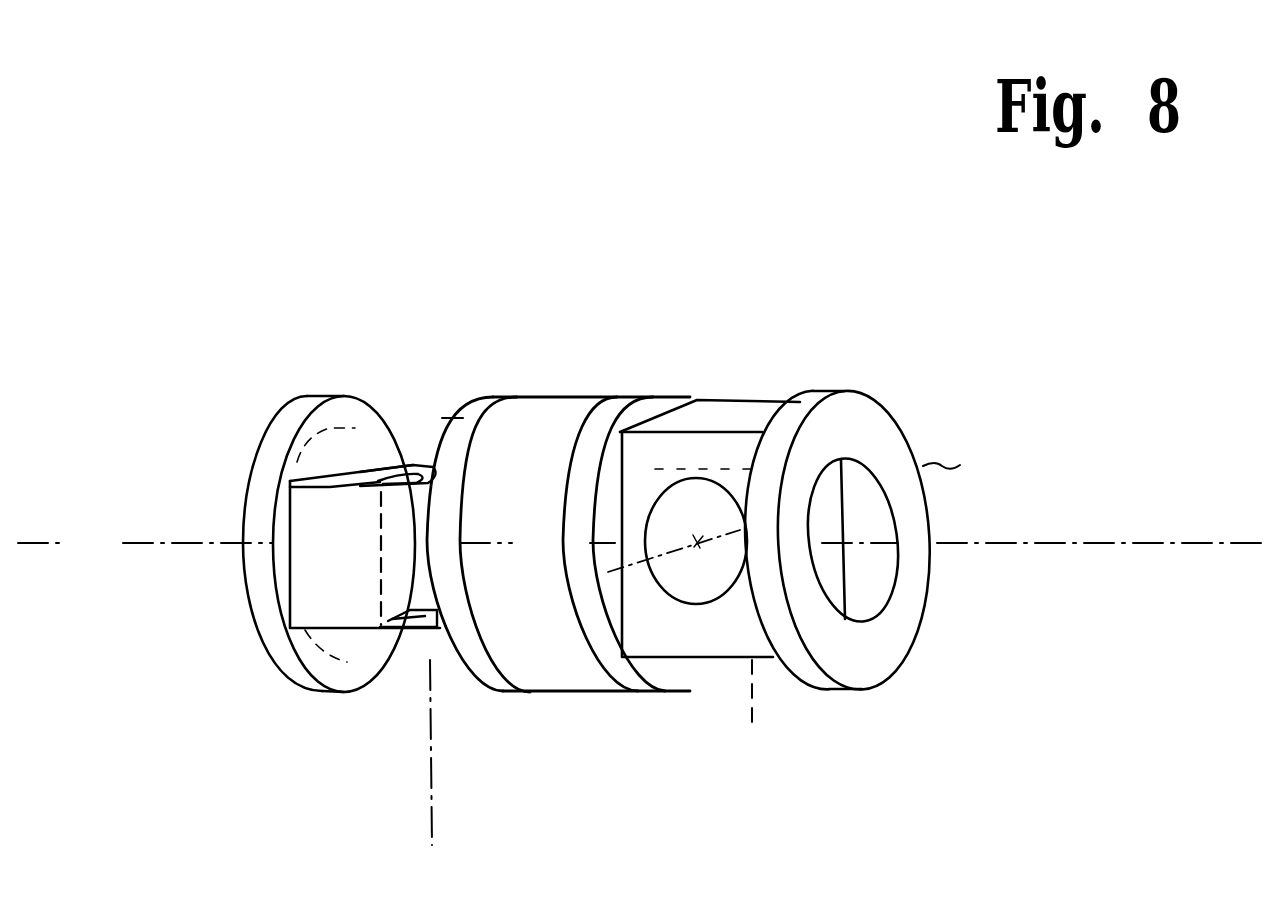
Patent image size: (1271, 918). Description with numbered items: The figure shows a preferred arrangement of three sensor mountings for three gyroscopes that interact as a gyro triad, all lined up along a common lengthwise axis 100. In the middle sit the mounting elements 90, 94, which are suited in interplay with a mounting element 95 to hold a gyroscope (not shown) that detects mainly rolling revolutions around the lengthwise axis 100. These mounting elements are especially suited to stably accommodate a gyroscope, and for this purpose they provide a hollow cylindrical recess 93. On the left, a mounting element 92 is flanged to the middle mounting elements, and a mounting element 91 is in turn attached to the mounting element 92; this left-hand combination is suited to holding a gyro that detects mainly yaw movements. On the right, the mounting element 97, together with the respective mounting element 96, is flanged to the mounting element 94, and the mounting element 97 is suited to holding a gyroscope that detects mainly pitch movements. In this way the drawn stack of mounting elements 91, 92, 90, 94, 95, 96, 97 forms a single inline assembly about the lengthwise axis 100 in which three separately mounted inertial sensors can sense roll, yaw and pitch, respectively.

The mounting element 90 is at (510, 695).
The mounting element 91 is at (328, 700).
The mounting element 92 is at (356, 585).
The hollow cylindrical recess 93 is at (421, 462).
The mounting element 94 is at (652, 695).
The mounting element 95 is at (568, 396).
The mounting element 96 is at (848, 693).
The mounting element 97 is at (733, 423).
The lengthwise axis 100 is at (1010, 537).